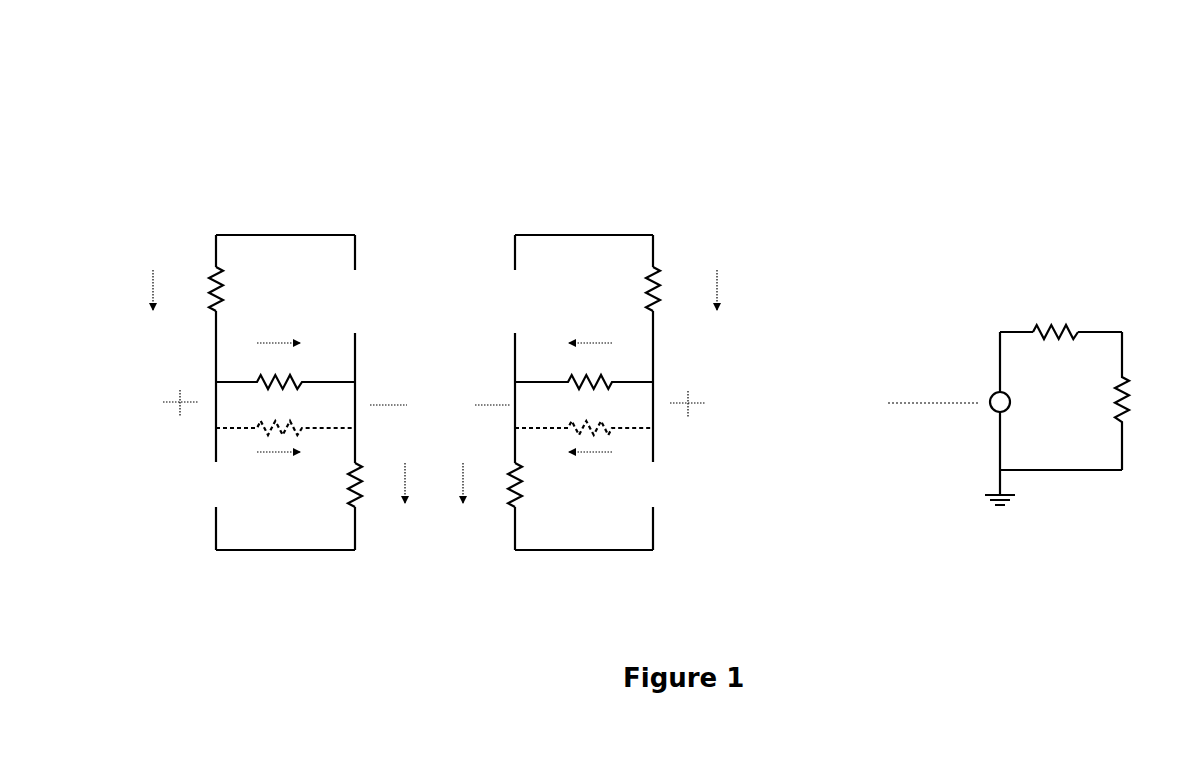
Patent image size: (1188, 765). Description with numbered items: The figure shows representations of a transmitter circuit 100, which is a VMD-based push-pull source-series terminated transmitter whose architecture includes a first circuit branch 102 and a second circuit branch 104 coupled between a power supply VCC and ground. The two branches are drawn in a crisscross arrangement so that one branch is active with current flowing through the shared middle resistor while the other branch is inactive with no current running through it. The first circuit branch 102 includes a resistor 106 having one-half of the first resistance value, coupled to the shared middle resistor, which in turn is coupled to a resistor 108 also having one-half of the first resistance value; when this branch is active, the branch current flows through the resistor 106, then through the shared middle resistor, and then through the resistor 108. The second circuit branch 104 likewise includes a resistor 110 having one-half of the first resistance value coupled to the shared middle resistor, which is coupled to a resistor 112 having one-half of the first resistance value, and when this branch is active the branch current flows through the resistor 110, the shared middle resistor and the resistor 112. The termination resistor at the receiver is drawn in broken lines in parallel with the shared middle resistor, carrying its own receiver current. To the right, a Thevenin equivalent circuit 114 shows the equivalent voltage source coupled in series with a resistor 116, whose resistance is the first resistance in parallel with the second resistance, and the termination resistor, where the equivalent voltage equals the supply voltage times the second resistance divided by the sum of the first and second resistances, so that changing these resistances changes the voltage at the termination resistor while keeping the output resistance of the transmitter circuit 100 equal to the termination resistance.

The transmitter circuit 100 is at (462, 579).
The first circuit branch 102 is at (285, 392).
The second circuit branch 104 is at (588, 392).
The resistor 106 is at (241, 289).
The resistor 108 is at (331, 485).
The resistor 110 is at (631, 289).
The resistor 112 is at (539, 485).
The Thevenin equivalent circuit 114 is at (1028, 523).
The resistor 116 is at (1055, 345).